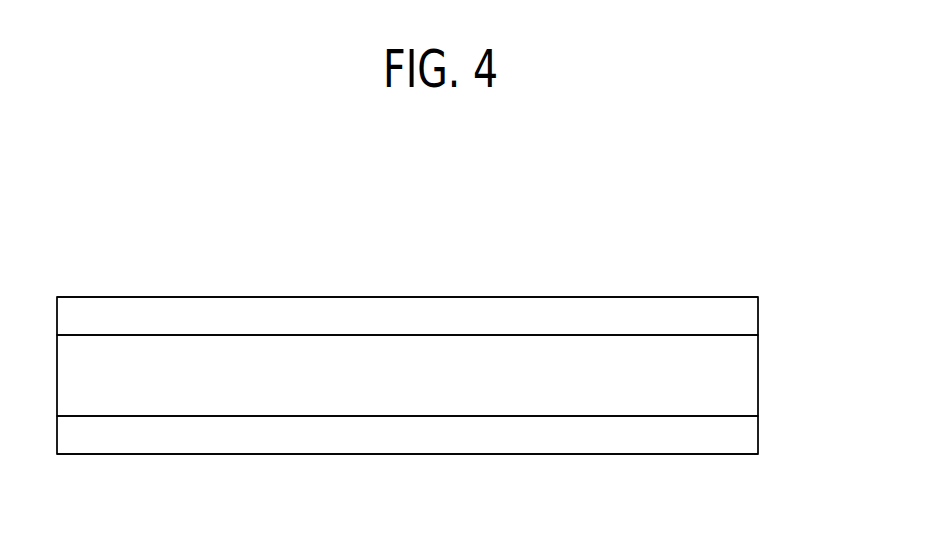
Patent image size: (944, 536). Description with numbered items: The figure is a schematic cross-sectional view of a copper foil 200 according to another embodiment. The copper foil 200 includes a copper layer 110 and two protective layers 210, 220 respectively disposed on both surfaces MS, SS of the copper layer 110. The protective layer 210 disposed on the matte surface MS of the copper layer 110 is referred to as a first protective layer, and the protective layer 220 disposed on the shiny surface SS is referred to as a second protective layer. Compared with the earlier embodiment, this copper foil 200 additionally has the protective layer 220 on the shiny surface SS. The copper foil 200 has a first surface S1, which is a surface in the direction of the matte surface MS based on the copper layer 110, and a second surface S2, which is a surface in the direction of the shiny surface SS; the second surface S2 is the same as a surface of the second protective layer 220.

The copper foil 200 is at (71, 209).
The first protective layer 210 is at (745, 318).
The copper layer 110 is at (745, 377).
The second protective layer 220 is at (745, 435).
The matte surface MS is at (280, 334).
The shiny surface SS is at (280, 417).
The first surface S1 is at (434, 297).
The second surface S2 is at (434, 455).